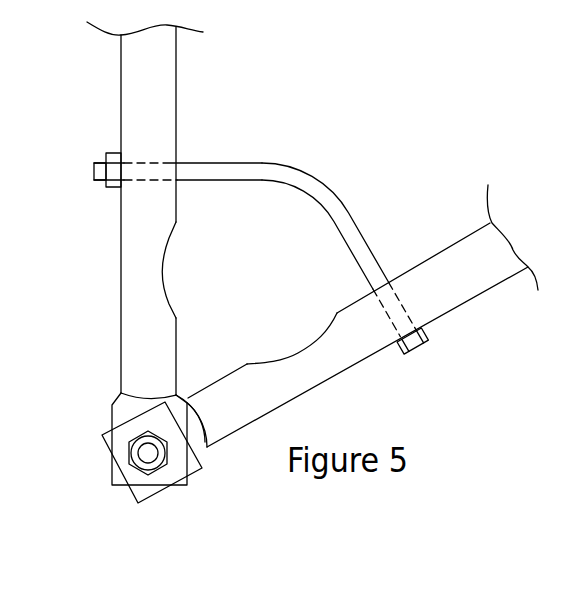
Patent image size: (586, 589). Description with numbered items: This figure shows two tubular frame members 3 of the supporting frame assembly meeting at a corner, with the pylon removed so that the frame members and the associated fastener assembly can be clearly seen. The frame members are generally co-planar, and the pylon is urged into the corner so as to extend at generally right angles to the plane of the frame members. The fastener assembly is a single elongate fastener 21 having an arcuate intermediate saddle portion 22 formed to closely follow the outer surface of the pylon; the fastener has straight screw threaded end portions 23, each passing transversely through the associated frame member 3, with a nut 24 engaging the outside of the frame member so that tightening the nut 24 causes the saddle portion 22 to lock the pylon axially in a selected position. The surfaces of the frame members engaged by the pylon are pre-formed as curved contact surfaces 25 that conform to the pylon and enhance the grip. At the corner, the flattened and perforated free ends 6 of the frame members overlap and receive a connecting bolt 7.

The upper straight frame member 3 is at (163, 71).
The elongate fastener 21 is at (217, 173).
The arcuate intermediate saddle portion 22 is at (313, 188).
The straight screw threaded end portion 23 is at (97, 173).
The nut 24 is at (110, 187).
The curved contact surface 25 is at (165, 267).
The free end 6 is at (143, 489).
The connecting bolt 7 is at (150, 456).